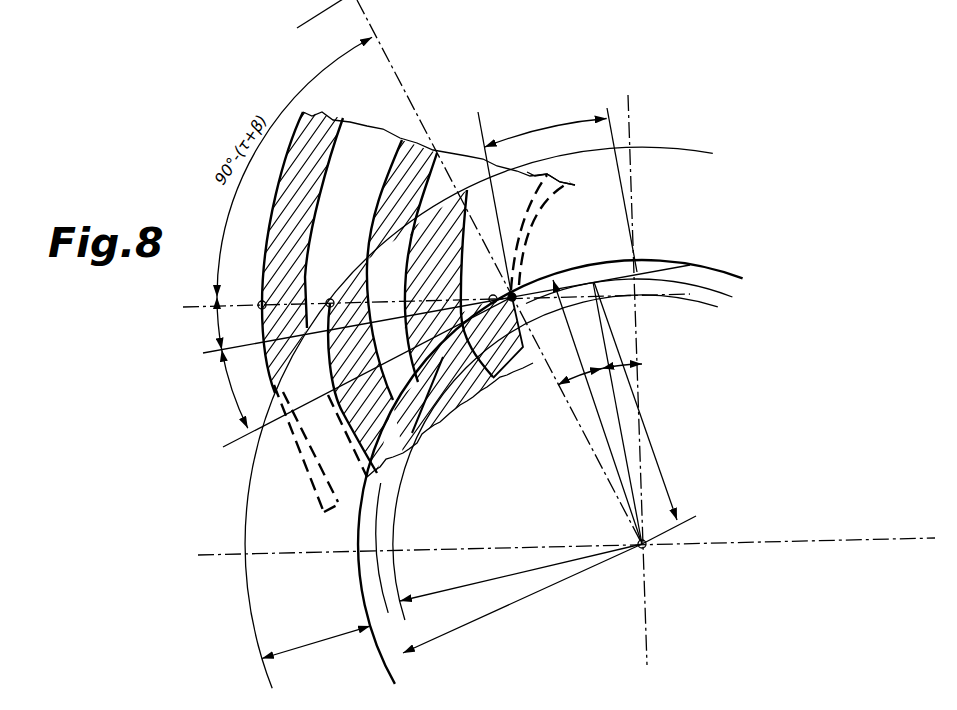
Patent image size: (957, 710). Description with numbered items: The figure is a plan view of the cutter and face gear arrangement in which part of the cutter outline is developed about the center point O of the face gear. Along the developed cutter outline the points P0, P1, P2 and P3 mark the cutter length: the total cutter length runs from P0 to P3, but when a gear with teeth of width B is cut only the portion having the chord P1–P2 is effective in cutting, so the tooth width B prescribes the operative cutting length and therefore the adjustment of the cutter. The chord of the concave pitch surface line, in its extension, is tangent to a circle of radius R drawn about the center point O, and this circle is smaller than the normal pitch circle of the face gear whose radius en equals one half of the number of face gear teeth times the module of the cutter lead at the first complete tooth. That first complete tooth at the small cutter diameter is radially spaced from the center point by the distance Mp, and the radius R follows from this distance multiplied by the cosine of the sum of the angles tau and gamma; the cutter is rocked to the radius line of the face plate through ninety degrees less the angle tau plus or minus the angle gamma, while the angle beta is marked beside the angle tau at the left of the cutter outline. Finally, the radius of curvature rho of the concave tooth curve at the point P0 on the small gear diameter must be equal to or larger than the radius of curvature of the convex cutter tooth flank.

The center of rotation O is at (566, 380).
The point P0 is at (499, 272).
The point P1 is at (482, 291).
The point P2 is at (320, 295).
The point P3 is at (247, 298).
The radius R is at (521, 572).
The normal pitch circle radius en is at (522, 598).
The width of tooth B is at (316, 641).
The radial distance Md Mp is at (624, 412).
The radius of curvature rho is at (557, 202).
The angle τ tau is at (427, 413).
The angle γ gamma is at (622, 355).
The angle β beta is at (209, 323).